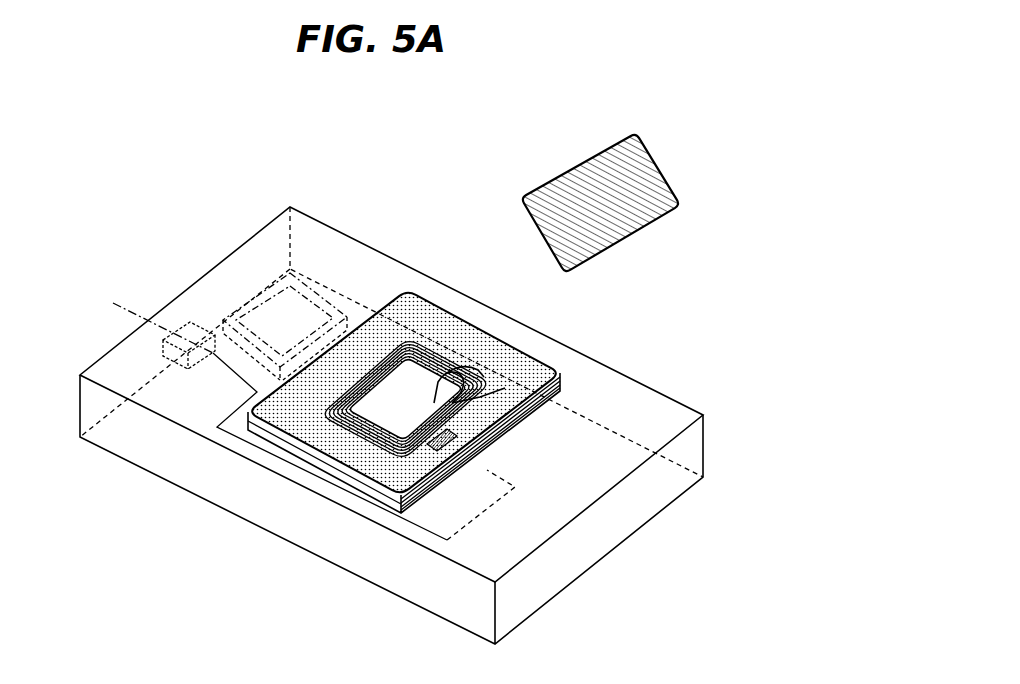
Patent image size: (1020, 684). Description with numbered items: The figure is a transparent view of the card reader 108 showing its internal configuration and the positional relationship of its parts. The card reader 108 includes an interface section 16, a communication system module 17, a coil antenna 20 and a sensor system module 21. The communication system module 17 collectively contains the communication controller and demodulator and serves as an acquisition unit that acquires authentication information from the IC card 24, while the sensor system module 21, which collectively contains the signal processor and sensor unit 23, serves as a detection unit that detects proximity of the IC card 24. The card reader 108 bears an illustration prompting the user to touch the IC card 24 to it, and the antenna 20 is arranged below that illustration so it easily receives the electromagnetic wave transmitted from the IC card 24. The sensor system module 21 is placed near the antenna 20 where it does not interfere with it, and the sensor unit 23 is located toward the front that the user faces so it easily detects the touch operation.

The card reader 108 is at (662, 393).
The IC card 24 is at (592, 162).
The interface section 16 is at (206, 332).
The communication system module 17 is at (318, 283).
The sensor system module 21 is at (390, 513).
The coil antenna 20 is at (300, 453).
The sensor unit 23 is at (437, 441).